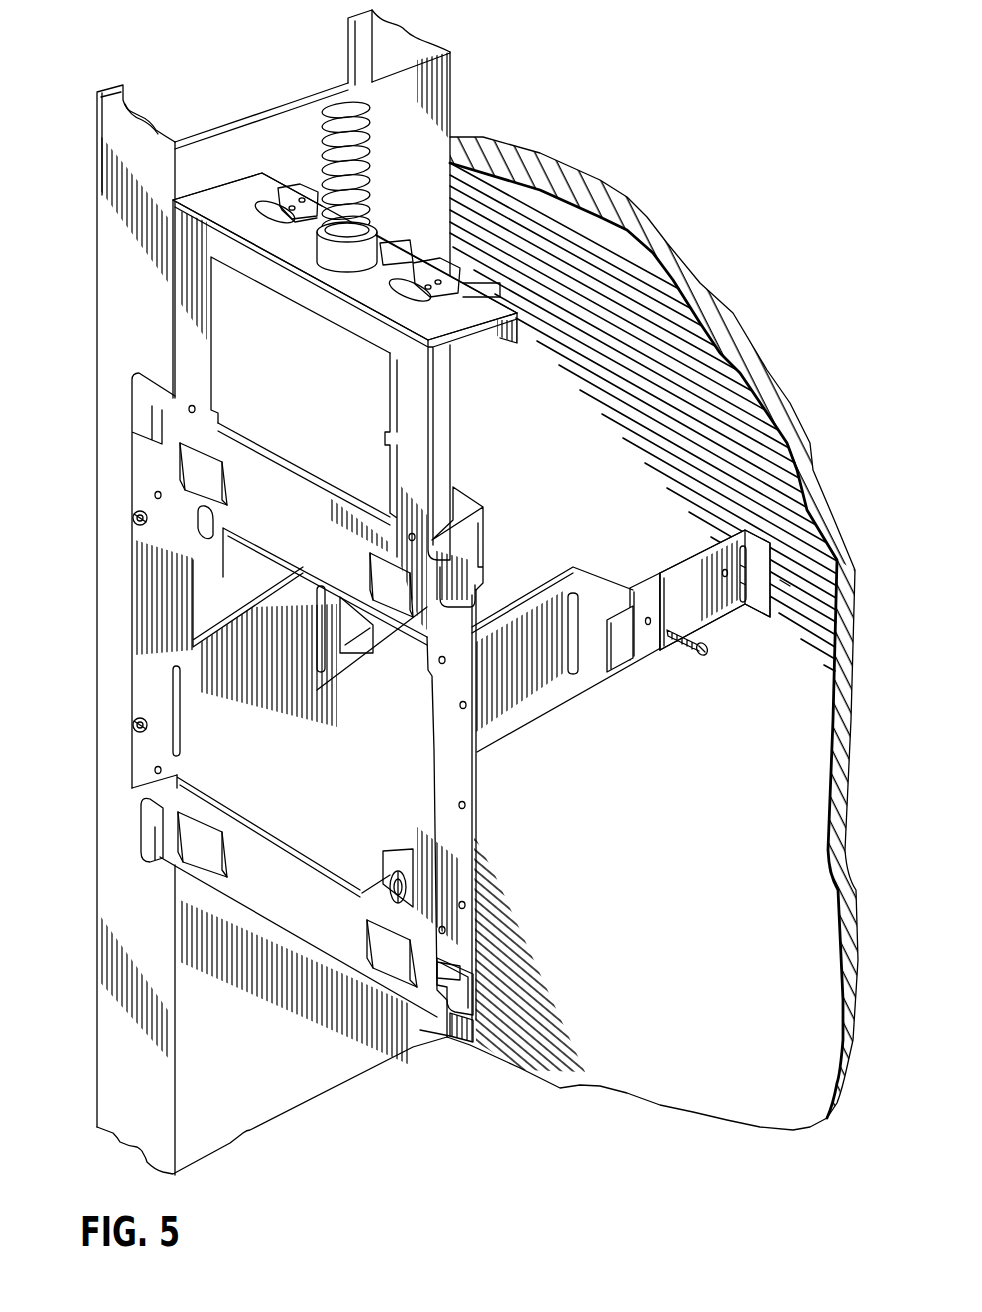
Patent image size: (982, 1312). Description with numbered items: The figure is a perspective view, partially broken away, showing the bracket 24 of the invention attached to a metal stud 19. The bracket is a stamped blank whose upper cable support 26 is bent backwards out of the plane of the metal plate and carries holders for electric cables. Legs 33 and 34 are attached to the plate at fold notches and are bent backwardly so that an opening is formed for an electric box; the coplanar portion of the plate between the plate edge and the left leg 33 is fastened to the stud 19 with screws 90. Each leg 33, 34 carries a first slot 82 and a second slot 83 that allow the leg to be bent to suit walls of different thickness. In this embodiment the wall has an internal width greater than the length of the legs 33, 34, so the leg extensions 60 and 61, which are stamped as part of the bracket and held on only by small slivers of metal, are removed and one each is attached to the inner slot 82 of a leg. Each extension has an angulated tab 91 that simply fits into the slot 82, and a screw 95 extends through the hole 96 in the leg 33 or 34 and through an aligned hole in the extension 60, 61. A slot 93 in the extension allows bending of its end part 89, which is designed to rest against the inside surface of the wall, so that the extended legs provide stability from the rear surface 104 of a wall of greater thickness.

The stud 19 is at (97, 238).
The bracket 24 is at (526, 826).
The cable support 26 is at (302, 252).
The leg 33 is at (495, 710).
The leg 34 is at (210, 720).
The leg extension 60 is at (689, 556).
The leg extension 61 is at (477, 496).
The first slot 82 is at (630, 586).
The second slot 83 is at (582, 596).
The end part 89 is at (785, 587).
The screws 90 is at (133, 518).
The angulated tab 91 is at (622, 652).
The slot 93 is at (750, 572).
The screw 95 is at (704, 656).
The hole 96 is at (648, 616).
The rear surface 104 is at (640, 843).